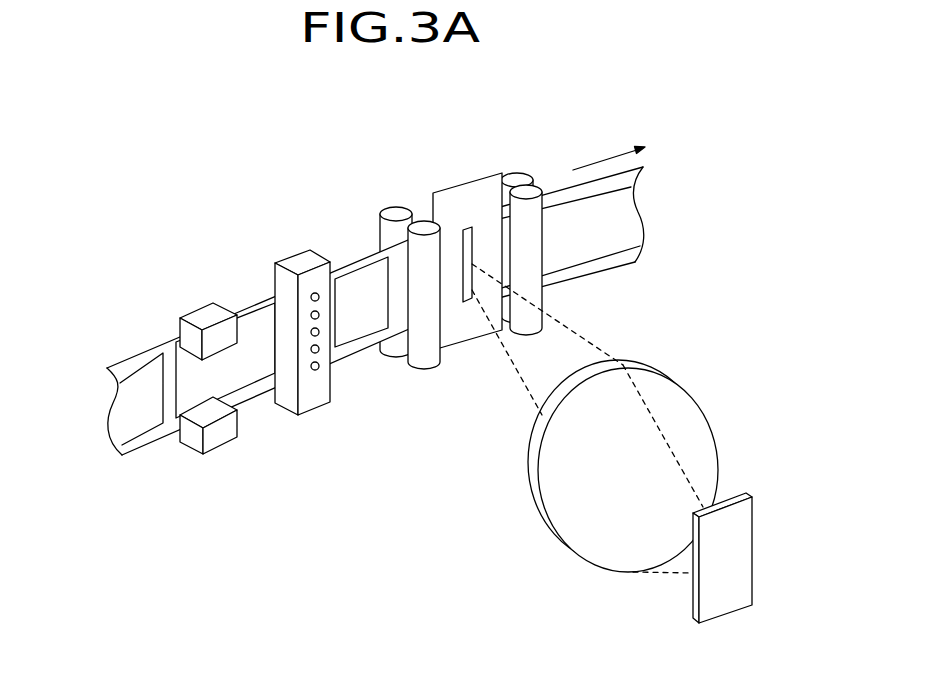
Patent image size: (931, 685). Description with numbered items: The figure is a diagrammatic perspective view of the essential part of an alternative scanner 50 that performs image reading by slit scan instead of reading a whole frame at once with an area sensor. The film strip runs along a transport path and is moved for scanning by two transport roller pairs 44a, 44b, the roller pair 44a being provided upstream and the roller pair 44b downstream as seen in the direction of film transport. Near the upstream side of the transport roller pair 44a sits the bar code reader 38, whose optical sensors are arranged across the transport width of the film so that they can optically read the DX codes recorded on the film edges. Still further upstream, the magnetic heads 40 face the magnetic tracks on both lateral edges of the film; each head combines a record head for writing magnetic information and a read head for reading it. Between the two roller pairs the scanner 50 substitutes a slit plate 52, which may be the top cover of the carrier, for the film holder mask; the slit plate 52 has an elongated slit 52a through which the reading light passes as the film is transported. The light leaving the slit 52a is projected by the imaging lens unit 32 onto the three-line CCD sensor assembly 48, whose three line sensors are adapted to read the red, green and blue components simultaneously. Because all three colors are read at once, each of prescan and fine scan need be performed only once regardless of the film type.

The imaging lens unit 32 is at (672, 402).
The bar code reader 38 is at (293, 260).
The magnetic heads 40 is at (203, 317).
The transport roller pair 44a is at (396, 282).
The transport roller pair 44b is at (517, 248).
The three-line CCD sensor assembly 48 is at (735, 550).
The scanner 50 is at (401, 314).
The slit plate 52 is at (495, 263).
The slit 52a is at (468, 228).